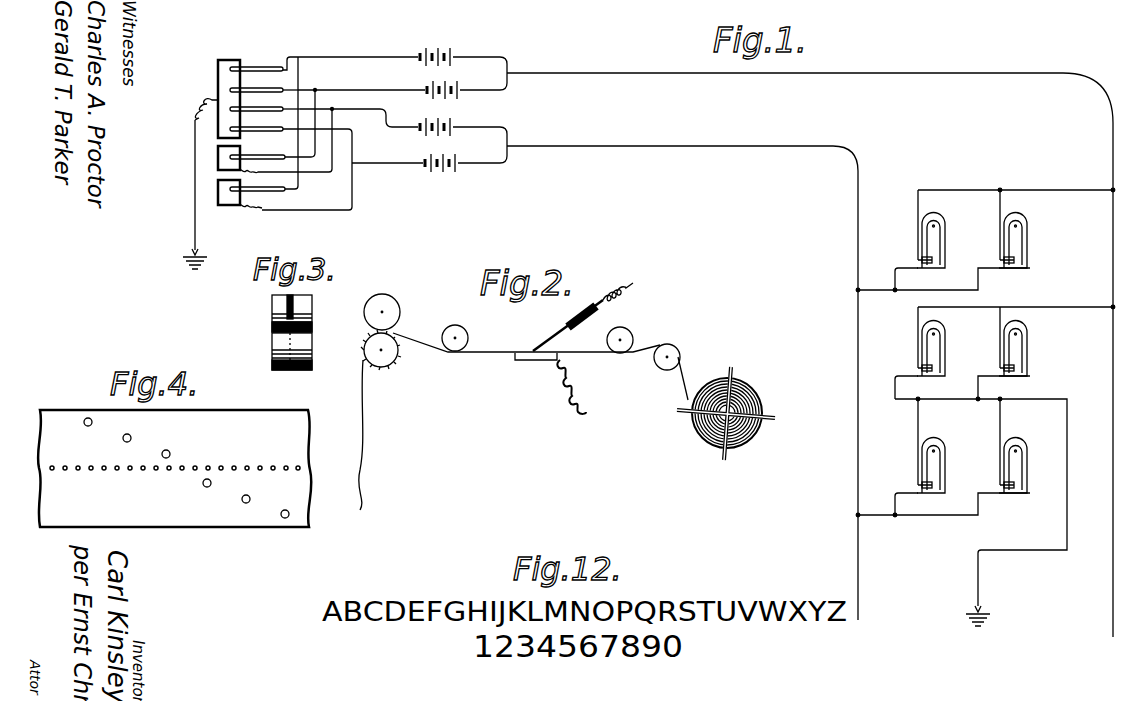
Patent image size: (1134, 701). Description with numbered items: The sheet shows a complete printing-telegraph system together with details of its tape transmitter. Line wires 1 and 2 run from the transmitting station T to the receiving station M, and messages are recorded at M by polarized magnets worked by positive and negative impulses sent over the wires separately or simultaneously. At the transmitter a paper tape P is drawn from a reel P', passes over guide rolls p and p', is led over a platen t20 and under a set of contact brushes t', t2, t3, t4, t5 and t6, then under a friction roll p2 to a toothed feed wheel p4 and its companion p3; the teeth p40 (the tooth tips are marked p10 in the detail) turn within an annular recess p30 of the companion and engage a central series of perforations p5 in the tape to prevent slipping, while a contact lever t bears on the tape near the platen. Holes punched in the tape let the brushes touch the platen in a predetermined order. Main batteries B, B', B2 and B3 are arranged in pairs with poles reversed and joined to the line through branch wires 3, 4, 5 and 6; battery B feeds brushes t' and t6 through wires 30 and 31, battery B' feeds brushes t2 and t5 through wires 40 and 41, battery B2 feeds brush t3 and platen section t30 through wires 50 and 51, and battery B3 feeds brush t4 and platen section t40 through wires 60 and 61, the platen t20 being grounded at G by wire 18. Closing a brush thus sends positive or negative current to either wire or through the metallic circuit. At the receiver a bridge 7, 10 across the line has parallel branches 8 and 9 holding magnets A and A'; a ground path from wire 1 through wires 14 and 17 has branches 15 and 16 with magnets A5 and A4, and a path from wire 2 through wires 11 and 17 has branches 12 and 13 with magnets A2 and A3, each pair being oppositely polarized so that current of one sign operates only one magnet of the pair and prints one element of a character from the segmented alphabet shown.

In FIG. 1, the transmitting station T is at (241, 80).
In FIG. 1, the contact brush t' is at (256, 58).
In FIG. 1, the contact brush t2 is at (256, 82).
In FIG. 1, the contact brush t3 is at (256, 101).
In FIG. 1, the contact brush t4 is at (256, 120).
In FIG. 1, the contact brush t5 is at (257, 148).
In FIG. 1, the contact brush t6 is at (257, 181).
In FIG. 1, the platen t20 is at (206, 93).
In FIG. 2, the platen t20 is at (535, 362).
In FIG. 1, the platen section t30 is at (230, 159).
In FIG. 1, the platen section t40 is at (230, 194).
In FIG. 1, the ground wire 18 is at (185, 185).
In FIG. 2, the ground wire 18 is at (579, 393).
In FIG. 1, the ground G is at (597, 434).
In FIG. 1, the wire 30 is at (289, 57).
In FIG. 2, the wire 30 is at (634, 288).
In FIG. 1, the wire 31 is at (300, 126).
In FIG. 1, the branch wire 3 is at (402, 66).
In FIG. 1, the wire 40 is at (290, 86).
In FIG. 1, the wire 41 is at (308, 123).
In FIG. 1, the branch wire 4 is at (392, 82).
In FIG. 1, the wire 50 is at (291, 105).
In FIG. 1, the wire 51 is at (305, 147).
In FIG. 1, the branch wire 5 is at (403, 128).
In FIG. 1, the wire 60 is at (325, 141).
In FIG. 1, the wire 61 is at (316, 195).
In FIG. 1, the branch wire 6 is at (420, 155).
In FIG. 1, the main transmitting battery B is at (435, 44).
In FIG. 1, the main transmitting battery B' is at (442, 82).
In FIG. 1, the main transmitting battery B2 is at (436, 118).
In FIG. 1, the main transmitting battery B3 is at (440, 154).
In FIG. 1, the line wire 2 is at (810, 347).
In FIG. 1, the line wire 1 is at (682, 375).
In FIG. 1, the receiving station M is at (834, 268).
In FIG. 1, the bridge wire 7 is at (1016, 182).
In FIG. 1, the bridge branch 8 is at (962, 240).
In FIG. 1, the bridge branch 9 is at (899, 240).
In FIG. 1, the bridge wire 10 is at (876, 297).
In FIG. 1, the ground connection wire 11 is at (1016, 301).
In FIG. 1, the ground branch 12 is at (995, 353).
In FIG. 1, the ground branch 13 is at (897, 353).
In FIG. 1, the ground connection wire 14 is at (876, 524).
In FIG. 1, the ground branch 15 is at (897, 457).
In FIG. 1, the ground branch 16 is at (962, 457).
In FIG. 1, the ground wire 17 is at (991, 501).
In FIG. 1, the polarized receiving magnet A is at (1025, 238).
In FIG. 1, the polarized receiving magnet A' is at (943, 238).
In FIG. 1, the polarized receiving magnet A2 is at (1028, 347).
In FIG. 1, the polarized receiving magnet A3 is at (944, 347).
In FIG. 1, the polarized receiving magnet A4 is at (1027, 461).
In FIG. 1, the polarized receiving magnet A5 is at (944, 458).
In FIG. 2, the companion roll p3 is at (400, 306).
In FIG. 3, the companion roll p3 is at (312, 305).
In FIG. 2, the toothed feed wheel p4 is at (392, 364).
In FIG. 3, the toothed feed wheel p4 is at (312, 343).
In FIG. 2, the roller teeth p10 is at (372, 366).
In FIG. 2, the guide or friction roll p2 is at (465, 330).
In FIG. 2, the paper tape P is at (509, 421).
In FIG. 4, the paper tape P is at (174, 468).
In FIG. 2, the contact lever t is at (568, 325).
In FIG. 2, the guide roll p' is at (630, 334).
In FIG. 2, the guide roll p is at (675, 367).
In FIG. 2, the reel P' is at (727, 413).
In FIG. 3, the annular recess p30 is at (273, 305).
In FIG. 3, the teeth p40 is at (273, 342).
In FIG. 4, the perforations p5 is at (153, 472).